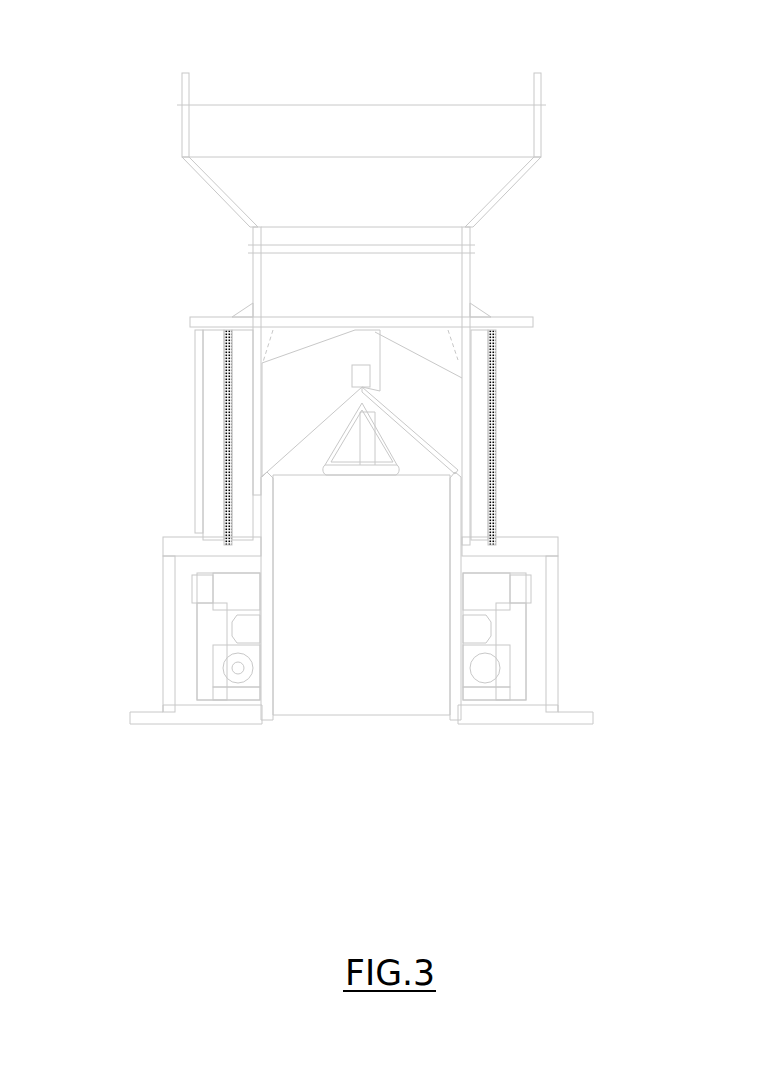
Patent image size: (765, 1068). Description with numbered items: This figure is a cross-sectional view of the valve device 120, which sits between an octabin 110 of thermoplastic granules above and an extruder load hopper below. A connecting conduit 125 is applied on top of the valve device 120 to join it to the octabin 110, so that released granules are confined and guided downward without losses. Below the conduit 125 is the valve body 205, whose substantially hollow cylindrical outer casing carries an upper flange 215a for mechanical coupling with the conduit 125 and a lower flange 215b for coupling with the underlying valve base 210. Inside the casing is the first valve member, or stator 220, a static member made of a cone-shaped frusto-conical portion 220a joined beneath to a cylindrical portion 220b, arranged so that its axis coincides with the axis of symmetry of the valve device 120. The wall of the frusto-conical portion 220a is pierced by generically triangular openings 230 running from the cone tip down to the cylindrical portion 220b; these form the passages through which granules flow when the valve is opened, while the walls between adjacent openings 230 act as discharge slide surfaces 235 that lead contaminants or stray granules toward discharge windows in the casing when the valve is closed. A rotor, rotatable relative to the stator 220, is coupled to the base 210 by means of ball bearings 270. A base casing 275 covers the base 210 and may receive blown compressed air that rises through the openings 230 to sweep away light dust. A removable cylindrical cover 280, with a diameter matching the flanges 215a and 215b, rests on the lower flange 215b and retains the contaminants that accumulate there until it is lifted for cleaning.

The octabin 110 is at (435, 84).
The valve device 120 is at (304, 145).
The connecting conduit 125 is at (278, 376).
The upper flange 215a is at (426, 282).
The lower flange 215b is at (566, 435).
The valve body 205 is at (161, 428).
The removable cylindrical cover 280 is at (462, 431).
The discharge slide surfaces 235 is at (470, 403).
The first valve member (stator) 220 is at (488, 560).
The frusto-conical portion 220a is at (265, 368).
The openings 230 is at (246, 417).
The cylindrical portion 220b is at (361, 641).
The valve base 210 is at (427, 630).
The base casing 275 is at (274, 623).
The ball bearings 270 is at (513, 730).